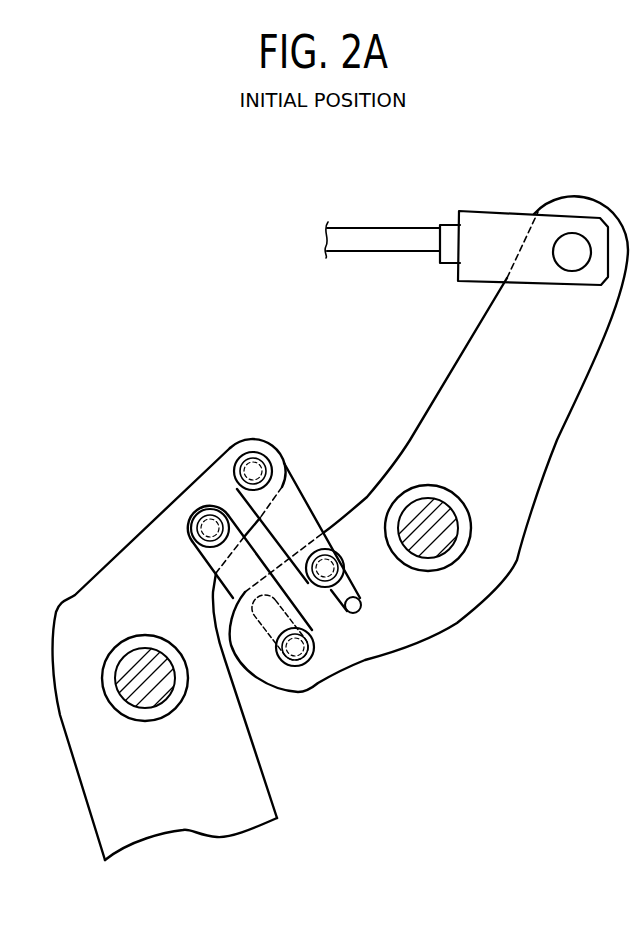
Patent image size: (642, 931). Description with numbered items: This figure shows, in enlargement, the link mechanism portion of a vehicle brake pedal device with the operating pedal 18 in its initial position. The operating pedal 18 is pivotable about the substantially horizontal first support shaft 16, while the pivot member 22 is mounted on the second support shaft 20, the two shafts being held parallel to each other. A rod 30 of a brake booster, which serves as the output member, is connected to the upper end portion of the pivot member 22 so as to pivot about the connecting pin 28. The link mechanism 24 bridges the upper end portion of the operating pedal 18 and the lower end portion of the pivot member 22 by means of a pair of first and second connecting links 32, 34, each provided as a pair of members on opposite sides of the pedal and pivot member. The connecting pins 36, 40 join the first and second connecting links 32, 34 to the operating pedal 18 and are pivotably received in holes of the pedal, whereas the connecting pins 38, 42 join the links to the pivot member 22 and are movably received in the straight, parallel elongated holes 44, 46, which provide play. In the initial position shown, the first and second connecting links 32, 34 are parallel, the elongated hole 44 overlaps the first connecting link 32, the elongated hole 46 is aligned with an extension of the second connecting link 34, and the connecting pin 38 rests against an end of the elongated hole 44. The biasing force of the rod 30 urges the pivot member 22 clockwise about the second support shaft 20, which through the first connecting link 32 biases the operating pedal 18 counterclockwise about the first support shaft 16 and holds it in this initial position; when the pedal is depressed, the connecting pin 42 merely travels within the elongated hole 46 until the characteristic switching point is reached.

The first support shaft 16 is at (128, 672).
The operating pedal 18 is at (181, 654).
The second support shaft 20 is at (445, 545).
The pivot member 22 is at (432, 417).
The link mechanism 24 is at (242, 541).
The connecting pin 28 is at (569, 238).
The rod 30 is at (377, 240).
The first connecting link 32 is at (215, 557).
The second connecting link 34 is at (323, 565).
The connecting pin 36 is at (207, 527).
The connecting pin 38 is at (300, 652).
The connecting pin 40 is at (256, 468).
The connecting pin 42 is at (326, 550).
The elongated hole 44 is at (258, 652).
The elongated hole 46 is at (348, 607).